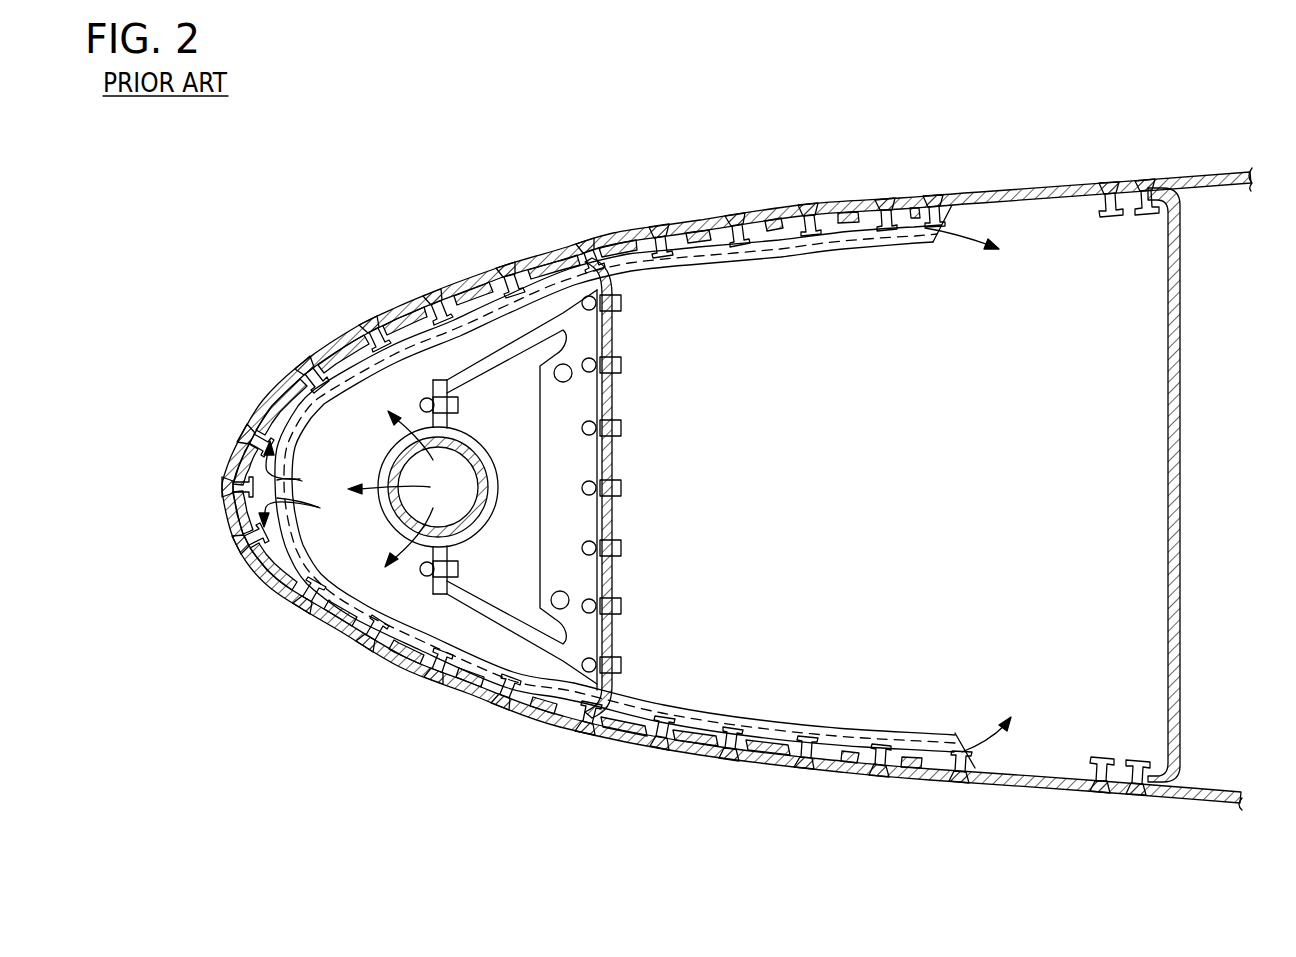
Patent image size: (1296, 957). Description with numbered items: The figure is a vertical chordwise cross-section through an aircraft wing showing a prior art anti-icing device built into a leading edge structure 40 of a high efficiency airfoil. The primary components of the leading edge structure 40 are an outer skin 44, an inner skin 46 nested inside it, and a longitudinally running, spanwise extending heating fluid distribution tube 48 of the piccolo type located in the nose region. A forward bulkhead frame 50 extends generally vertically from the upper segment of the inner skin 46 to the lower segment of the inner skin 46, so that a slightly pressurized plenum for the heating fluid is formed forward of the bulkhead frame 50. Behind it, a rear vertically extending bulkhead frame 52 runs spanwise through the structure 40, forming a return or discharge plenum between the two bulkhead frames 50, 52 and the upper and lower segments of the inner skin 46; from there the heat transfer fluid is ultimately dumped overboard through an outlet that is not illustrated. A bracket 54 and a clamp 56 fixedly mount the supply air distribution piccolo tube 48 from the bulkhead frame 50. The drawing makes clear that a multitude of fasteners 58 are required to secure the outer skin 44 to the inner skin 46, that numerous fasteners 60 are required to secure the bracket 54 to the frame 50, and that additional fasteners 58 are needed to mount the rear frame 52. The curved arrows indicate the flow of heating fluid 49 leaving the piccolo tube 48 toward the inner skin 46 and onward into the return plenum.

The leading edge structure 40 is at (260, 313).
The outer skin 44 is at (988, 188).
The inner skin 46 is at (940, 222).
The heating fluid distribution tube 48 is at (458, 480).
The hot air flow 49 is at (212, 462).
The forward bulkhead frame 50 is at (620, 442).
The rear bulkhead frame 52 is at (1183, 470).
The bracket 54 is at (541, 407).
The clamp 56 is at (473, 536).
The fasteners 58 is at (733, 210).
The fasteners 60 is at (622, 368).